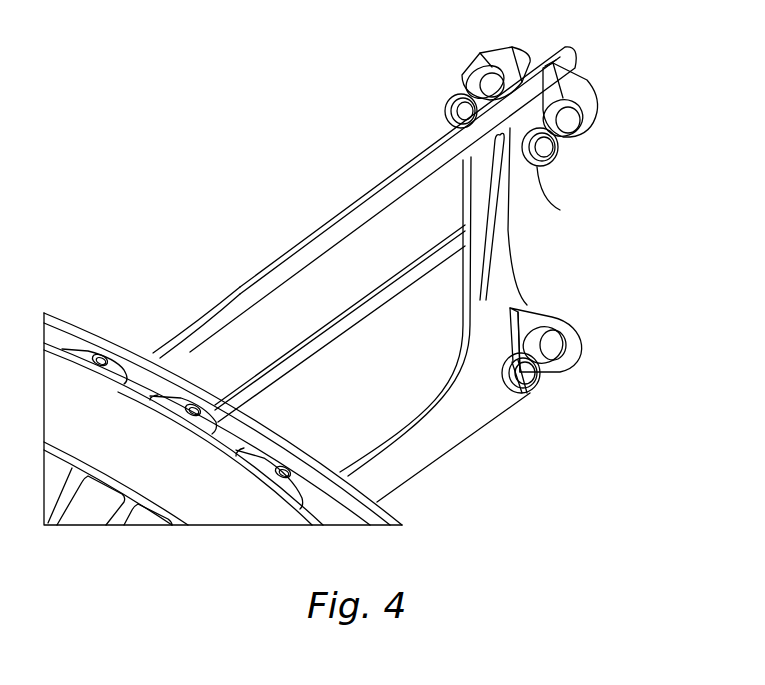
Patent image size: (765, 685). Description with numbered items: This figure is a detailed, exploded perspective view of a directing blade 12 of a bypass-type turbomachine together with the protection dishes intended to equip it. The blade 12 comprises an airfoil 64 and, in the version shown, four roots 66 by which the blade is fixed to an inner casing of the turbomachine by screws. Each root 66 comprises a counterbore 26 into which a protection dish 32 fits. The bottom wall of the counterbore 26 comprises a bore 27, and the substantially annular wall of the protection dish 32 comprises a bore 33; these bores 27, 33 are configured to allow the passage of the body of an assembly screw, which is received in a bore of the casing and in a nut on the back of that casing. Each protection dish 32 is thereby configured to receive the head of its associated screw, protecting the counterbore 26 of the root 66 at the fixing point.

The directing blade 12 is at (298, 304).
The counterbore 26 is at (563, 72).
The bore 27 is at (582, 135).
The protection dish 32 is at (558, 155).
The bore 33 is at (532, 165).
The airfoil 64 is at (375, 402).
The root 66 is at (507, 65).